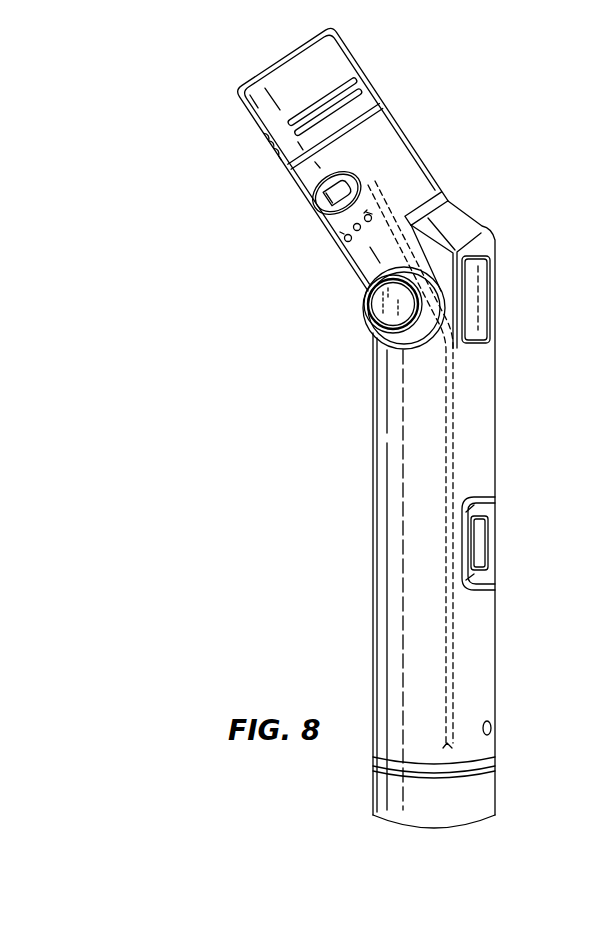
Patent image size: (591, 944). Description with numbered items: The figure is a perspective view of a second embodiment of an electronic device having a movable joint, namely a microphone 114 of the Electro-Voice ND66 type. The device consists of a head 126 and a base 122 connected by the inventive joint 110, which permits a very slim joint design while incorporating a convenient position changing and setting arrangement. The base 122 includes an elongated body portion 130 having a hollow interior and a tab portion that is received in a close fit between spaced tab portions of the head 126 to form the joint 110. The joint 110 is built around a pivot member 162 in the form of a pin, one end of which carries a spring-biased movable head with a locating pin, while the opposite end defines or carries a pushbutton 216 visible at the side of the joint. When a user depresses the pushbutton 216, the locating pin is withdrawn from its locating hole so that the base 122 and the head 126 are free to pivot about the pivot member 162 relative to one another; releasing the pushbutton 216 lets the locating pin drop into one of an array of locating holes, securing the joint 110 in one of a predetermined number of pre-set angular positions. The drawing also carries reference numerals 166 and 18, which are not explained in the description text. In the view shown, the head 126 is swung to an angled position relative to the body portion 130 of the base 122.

The microphone 114 is at (474, 112).
The head 126 is at (347, 63).
The notch 166 is at (268, 110).
The pivot member 162 is at (356, 317).
The pushbutton 216 is at (383, 308).
The joint 110 is at (508, 216).
The internal conduit 18 is at (457, 402).
The body portion 130 is at (470, 612).
The base 122 is at (487, 700).